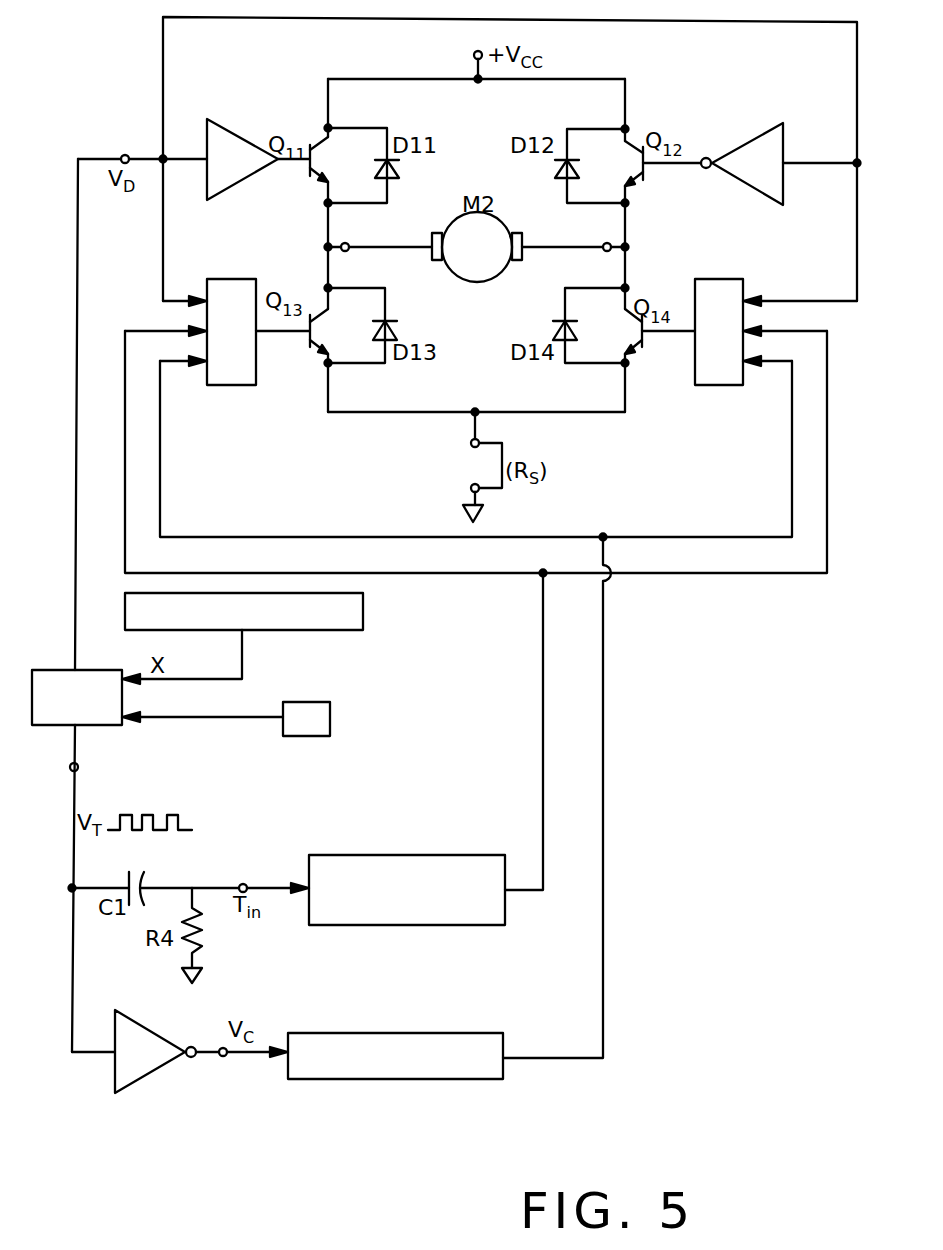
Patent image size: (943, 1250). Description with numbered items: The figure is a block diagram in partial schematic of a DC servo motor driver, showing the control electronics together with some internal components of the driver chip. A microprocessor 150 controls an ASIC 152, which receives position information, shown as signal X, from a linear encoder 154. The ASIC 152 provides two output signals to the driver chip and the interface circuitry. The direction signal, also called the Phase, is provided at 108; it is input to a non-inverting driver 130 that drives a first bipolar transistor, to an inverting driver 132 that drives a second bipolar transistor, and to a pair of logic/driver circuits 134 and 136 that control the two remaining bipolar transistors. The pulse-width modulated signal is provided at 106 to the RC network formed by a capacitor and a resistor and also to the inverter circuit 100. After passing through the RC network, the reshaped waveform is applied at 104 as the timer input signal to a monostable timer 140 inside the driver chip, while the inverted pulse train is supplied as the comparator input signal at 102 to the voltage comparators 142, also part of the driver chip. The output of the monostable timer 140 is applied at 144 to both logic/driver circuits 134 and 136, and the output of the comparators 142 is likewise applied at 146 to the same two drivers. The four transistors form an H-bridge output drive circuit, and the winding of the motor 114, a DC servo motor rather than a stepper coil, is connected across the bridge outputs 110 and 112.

The inverter circuit 100 is at (117, 1085).
The comparator input node 102 is at (223, 1057).
The timer input node 104 is at (243, 883).
The VT signal node 106 is at (78, 767).
The direction input node 108 is at (125, 155).
The H-bridge output 110 is at (347, 243).
The H-bridge output 112 is at (607, 252).
The motor 114 is at (490, 282).
The non-inverting driver 130 is at (228, 124).
The inverting driver 132 is at (743, 142).
The logic/driver circuit 134 is at (231, 386).
The logic/driver circuit 136 is at (718, 386).
The monostable timer 140 is at (363, 855).
The voltage comparators 142 is at (420, 1080).
The timer output line 144 is at (542, 652).
The comparator output line 146 is at (603, 672).
The microprocessor 150 is at (305, 702).
The ASIC 152 is at (68, 670).
The linear encoder 154 is at (364, 612).